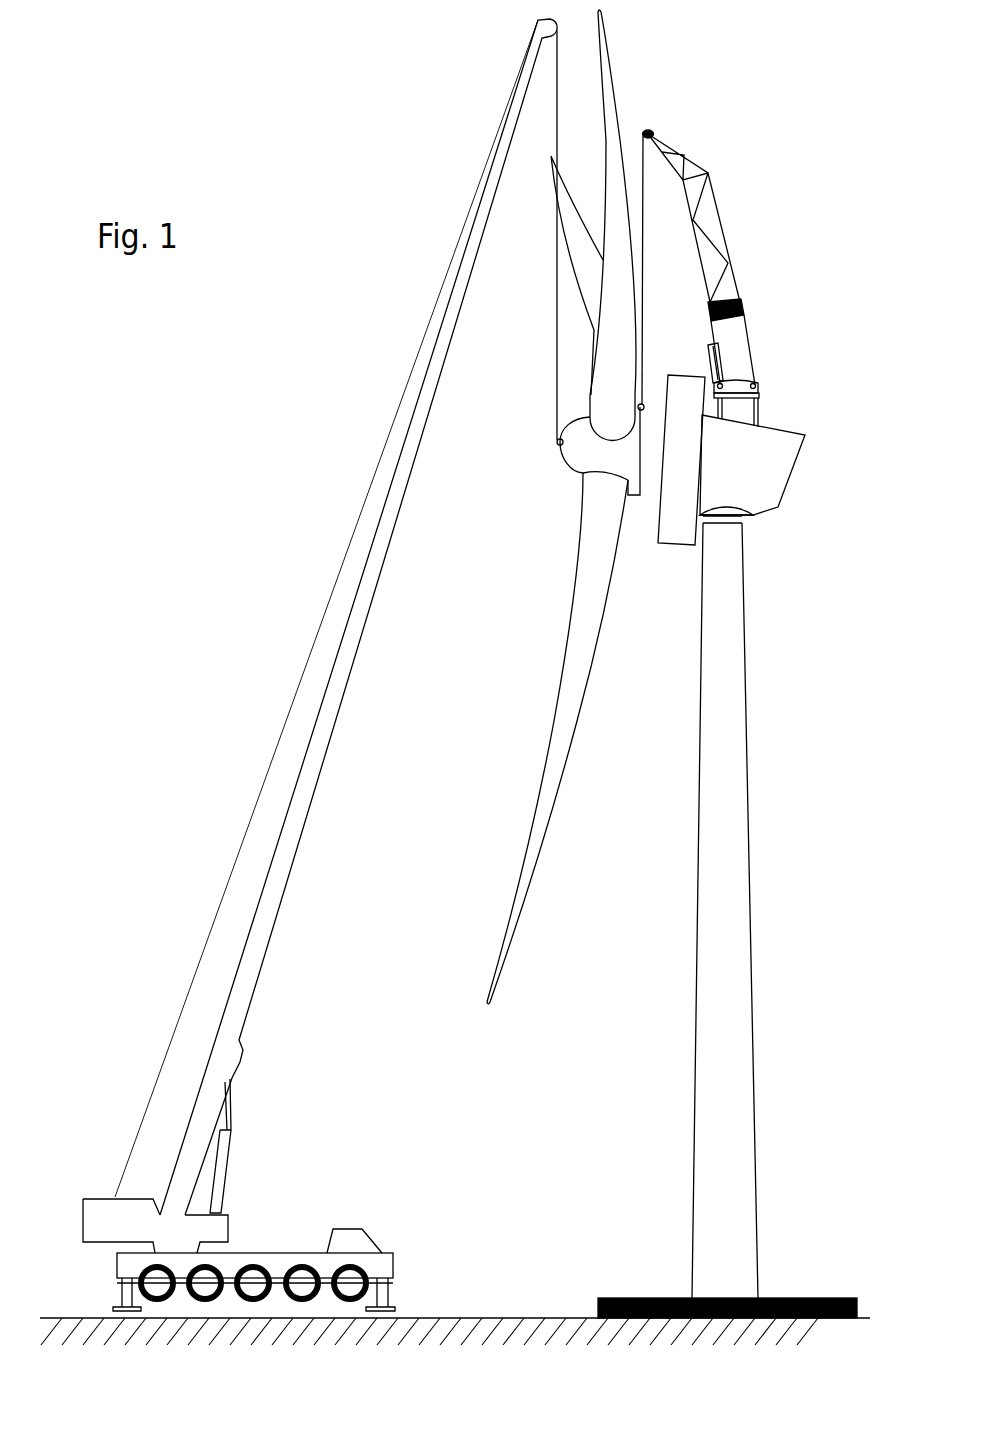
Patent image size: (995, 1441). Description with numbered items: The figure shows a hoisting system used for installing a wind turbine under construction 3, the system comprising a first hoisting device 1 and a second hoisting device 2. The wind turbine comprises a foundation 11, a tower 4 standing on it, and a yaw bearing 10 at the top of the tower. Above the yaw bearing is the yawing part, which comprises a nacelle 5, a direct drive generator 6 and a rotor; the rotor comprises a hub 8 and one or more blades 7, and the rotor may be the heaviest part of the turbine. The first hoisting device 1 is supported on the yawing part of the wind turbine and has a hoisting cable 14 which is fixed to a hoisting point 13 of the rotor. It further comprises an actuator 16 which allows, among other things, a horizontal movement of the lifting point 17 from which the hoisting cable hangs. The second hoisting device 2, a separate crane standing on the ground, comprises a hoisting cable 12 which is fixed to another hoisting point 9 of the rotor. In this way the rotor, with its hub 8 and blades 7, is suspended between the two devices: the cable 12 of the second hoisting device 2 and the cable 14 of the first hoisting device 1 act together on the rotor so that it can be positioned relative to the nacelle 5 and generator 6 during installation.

The first hoisting device 1 is at (741, 254).
The second hoisting device 2 is at (268, 1098).
The wind turbine under construction 3 is at (672, 664).
The tower 4 is at (752, 886).
The nacelle 5 is at (790, 470).
The direct drive generator 6 is at (685, 548).
The blades 7 is at (553, 718).
The hub 8 is at (564, 464).
The hoisting point 9 is at (557, 439).
The yaw bearing 10 is at (748, 517).
The foundation 11 is at (639, 1297).
The hoisting cable 12 is at (556, 340).
The hoisting point 13 is at (644, 400).
The hoisting cable 14 is at (666, 270).
The actuator 16 is at (707, 360).
The lifting point 17 is at (648, 128).